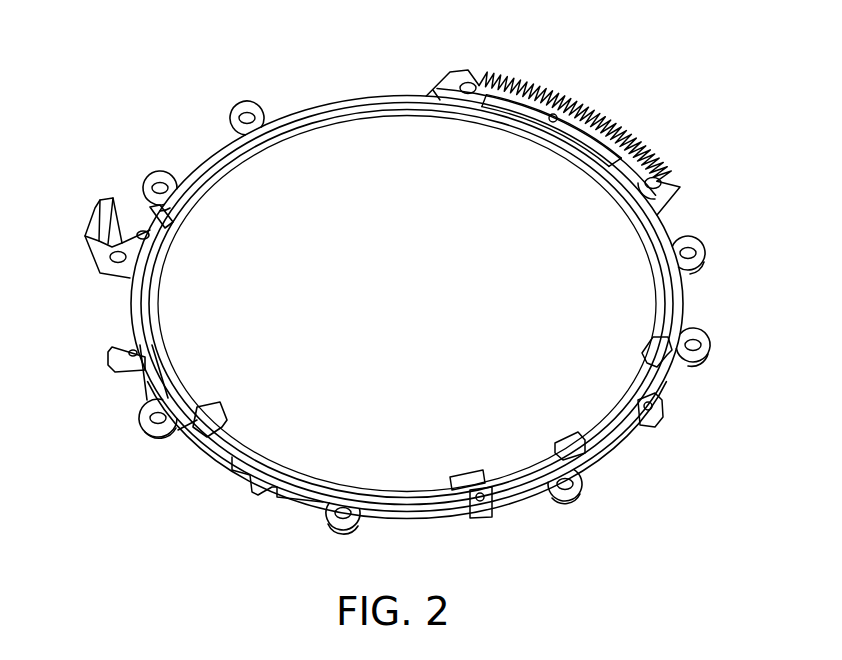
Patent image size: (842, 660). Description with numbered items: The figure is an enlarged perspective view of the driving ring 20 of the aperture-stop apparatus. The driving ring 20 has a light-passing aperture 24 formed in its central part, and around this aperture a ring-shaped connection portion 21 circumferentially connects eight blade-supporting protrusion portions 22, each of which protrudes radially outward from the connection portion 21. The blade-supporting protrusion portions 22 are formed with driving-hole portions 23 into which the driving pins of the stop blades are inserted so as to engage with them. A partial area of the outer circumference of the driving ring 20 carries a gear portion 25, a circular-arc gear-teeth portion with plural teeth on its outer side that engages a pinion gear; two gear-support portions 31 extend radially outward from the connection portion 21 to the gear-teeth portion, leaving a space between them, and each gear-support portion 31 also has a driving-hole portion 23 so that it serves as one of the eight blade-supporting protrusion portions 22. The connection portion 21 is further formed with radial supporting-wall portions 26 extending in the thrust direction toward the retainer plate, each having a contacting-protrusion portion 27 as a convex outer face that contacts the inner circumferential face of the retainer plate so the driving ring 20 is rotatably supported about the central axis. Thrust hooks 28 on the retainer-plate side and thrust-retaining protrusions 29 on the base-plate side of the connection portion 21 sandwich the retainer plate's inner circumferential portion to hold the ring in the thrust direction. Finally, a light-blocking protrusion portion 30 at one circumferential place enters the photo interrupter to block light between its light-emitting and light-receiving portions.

The driving ring 20 is at (130, 322).
The connection portion 21 is at (302, 478).
The blade-supporting protrusion portion 22 is at (138, 432).
The driving-hole portion 23 is at (485, 78).
The light-passing aperture 24 is at (478, 270).
The gear portion 25 is at (548, 85).
The radial supporting-wall portion 26 is at (572, 440).
The contacting-protrusion portion 27 is at (583, 460).
The thrust hook 28 is at (673, 363).
The thrust-retaining protrusion 29 is at (657, 420).
The light-blocking protrusion portion 30 is at (112, 200).
The gear-support portion 31 is at (455, 72).